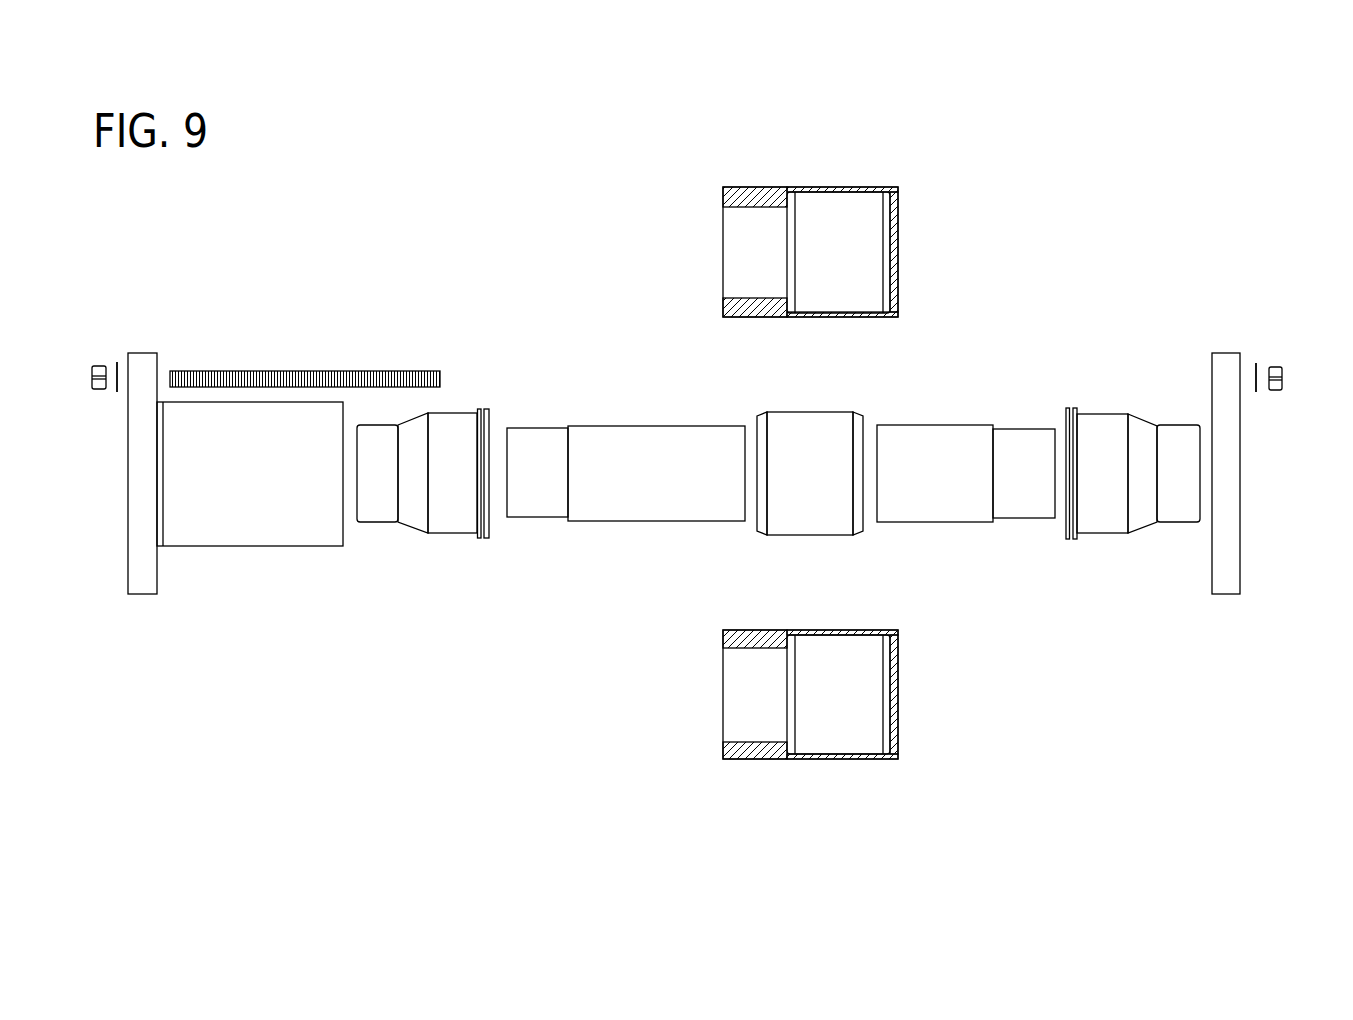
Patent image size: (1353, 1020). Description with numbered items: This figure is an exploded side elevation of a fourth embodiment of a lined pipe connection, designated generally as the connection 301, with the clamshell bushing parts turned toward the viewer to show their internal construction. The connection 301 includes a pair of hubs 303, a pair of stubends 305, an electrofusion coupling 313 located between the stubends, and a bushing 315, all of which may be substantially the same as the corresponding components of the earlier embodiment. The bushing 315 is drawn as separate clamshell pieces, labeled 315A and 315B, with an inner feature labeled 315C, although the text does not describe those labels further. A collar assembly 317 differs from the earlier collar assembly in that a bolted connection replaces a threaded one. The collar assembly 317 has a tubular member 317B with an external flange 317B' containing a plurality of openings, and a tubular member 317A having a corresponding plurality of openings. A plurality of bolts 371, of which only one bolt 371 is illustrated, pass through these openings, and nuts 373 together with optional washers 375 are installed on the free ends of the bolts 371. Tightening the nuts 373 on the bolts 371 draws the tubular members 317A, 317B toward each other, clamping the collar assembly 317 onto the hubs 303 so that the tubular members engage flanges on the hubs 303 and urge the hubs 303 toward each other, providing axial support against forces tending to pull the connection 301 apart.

The connection 301 is at (1107, 177).
The hubs 303 is at (428, 533).
The stubends 305 is at (657, 427).
The electrofusion coupling 313 is at (812, 412).
The bushing 315 is at (908, 165).
The first bushing 315A is at (818, 187).
The second bushing 315B is at (858, 630).
The bushing liner 315C is at (843, 193).
The collar assembly 317 is at (307, 613).
The tubular member 317A is at (1228, 352).
The tubular member 317B is at (250, 533).
The external flange 317B' is at (122, 527).
The bolt 371 is at (353, 370).
The nut 373 is at (103, 365).
The washer 375 is at (117, 364).